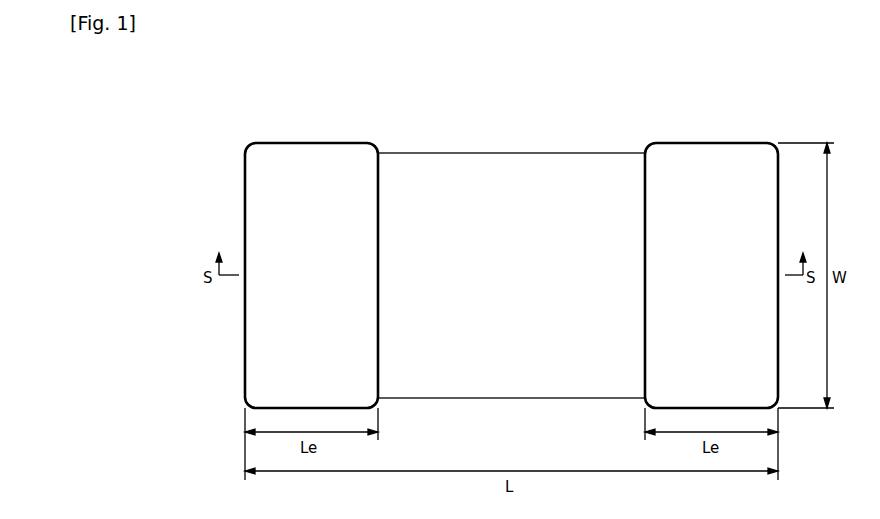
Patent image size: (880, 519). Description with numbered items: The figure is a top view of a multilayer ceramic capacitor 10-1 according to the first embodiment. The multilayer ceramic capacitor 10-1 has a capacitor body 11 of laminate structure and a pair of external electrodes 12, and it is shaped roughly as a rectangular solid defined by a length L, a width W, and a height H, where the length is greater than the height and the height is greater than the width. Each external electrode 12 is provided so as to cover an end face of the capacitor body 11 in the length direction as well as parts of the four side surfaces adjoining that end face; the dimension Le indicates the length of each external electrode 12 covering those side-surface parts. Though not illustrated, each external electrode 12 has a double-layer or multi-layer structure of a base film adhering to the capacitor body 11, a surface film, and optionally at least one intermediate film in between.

The multilayer ceramic capacitor 10-1 is at (266, 137).
The capacitor body 11 is at (485, 162).
The external electrode 12 is at (306, 155).